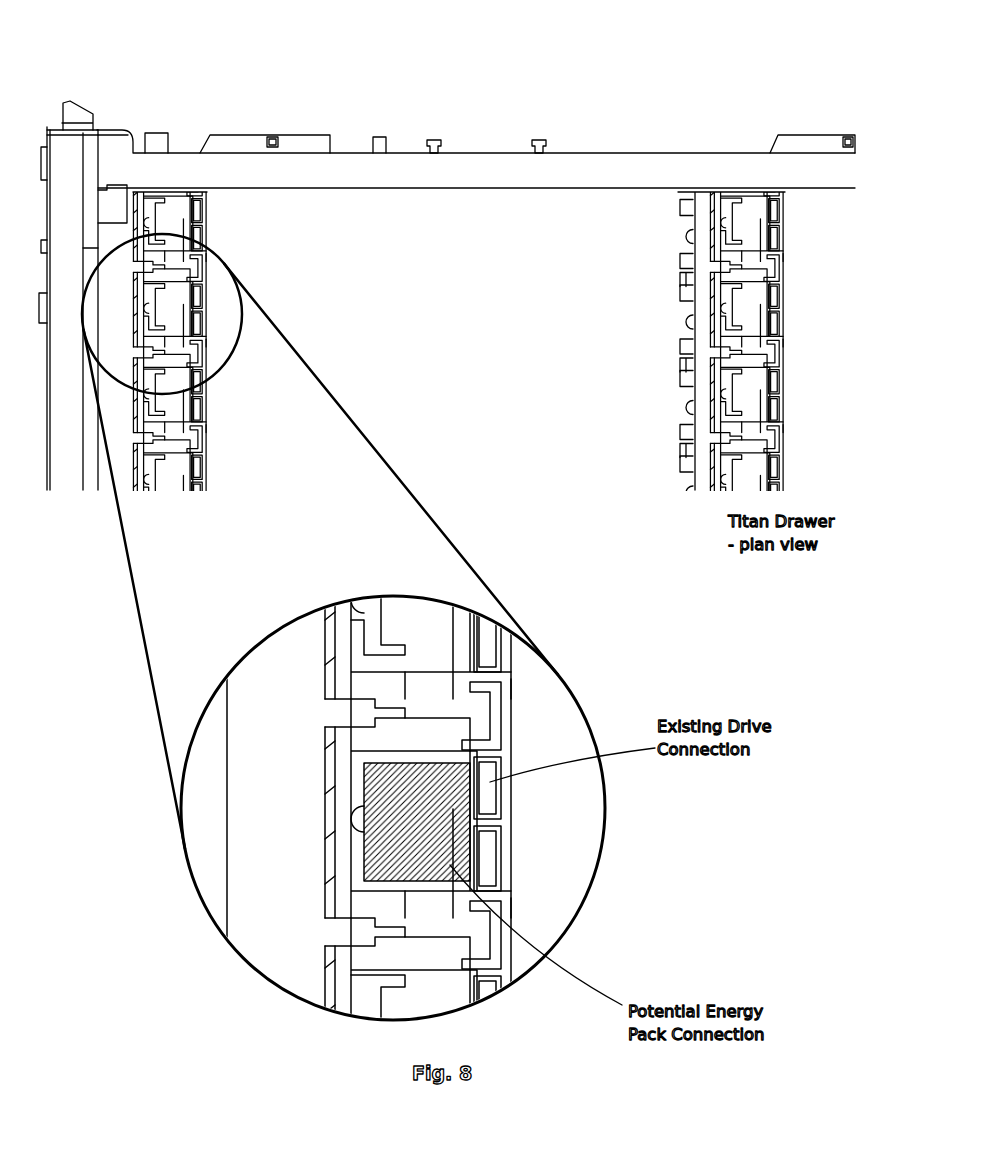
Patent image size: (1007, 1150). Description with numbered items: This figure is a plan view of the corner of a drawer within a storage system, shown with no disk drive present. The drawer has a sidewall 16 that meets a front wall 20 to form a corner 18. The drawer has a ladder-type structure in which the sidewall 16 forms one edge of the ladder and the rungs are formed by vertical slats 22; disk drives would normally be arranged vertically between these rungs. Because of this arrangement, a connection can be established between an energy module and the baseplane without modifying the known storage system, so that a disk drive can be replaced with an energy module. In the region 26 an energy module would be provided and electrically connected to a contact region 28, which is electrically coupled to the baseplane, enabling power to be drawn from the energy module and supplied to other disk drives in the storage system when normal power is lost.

The sidewall 16 is at (573, 170).
The corner 18 is at (80, 79).
The front wall 20 is at (120, 222).
The vertical slats 22 is at (700, 214).
The region 26 is at (465, 277).
The contact region 28 is at (200, 220).